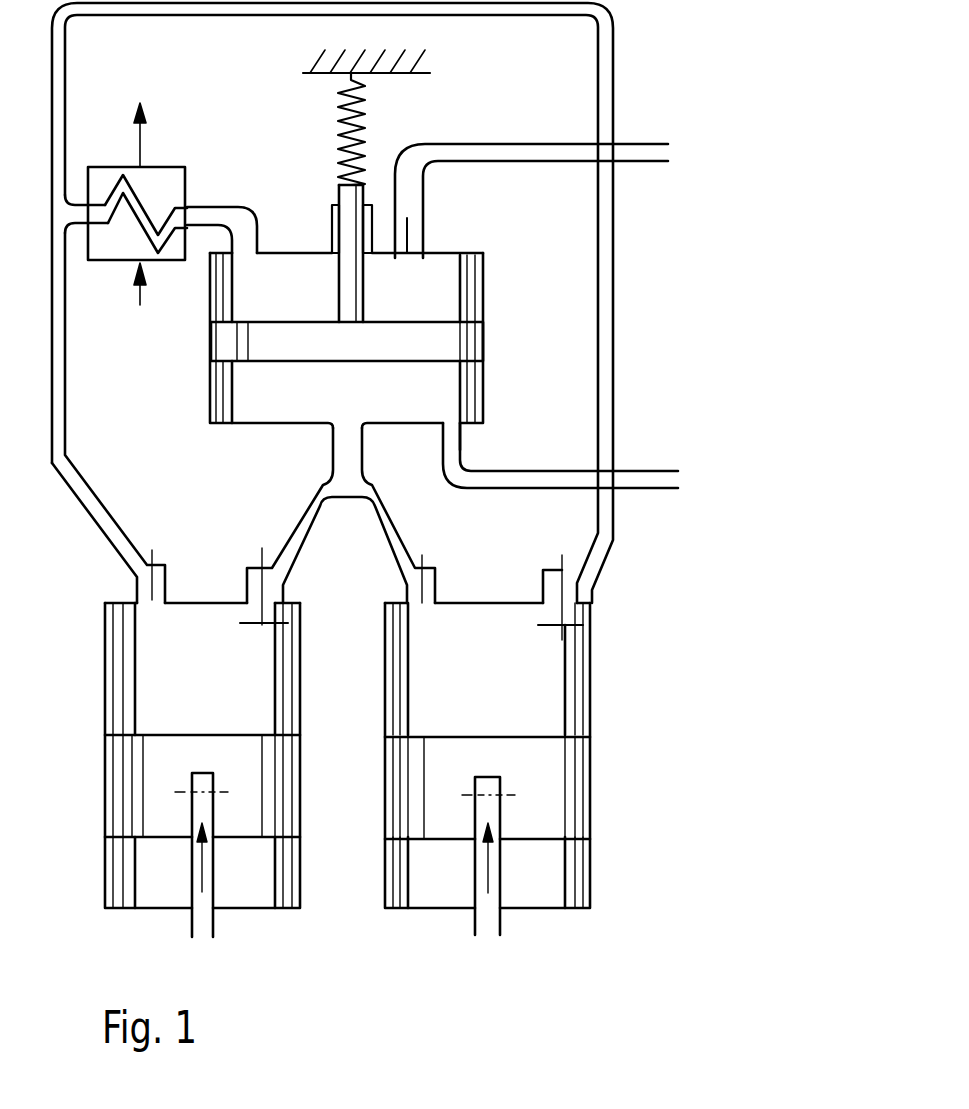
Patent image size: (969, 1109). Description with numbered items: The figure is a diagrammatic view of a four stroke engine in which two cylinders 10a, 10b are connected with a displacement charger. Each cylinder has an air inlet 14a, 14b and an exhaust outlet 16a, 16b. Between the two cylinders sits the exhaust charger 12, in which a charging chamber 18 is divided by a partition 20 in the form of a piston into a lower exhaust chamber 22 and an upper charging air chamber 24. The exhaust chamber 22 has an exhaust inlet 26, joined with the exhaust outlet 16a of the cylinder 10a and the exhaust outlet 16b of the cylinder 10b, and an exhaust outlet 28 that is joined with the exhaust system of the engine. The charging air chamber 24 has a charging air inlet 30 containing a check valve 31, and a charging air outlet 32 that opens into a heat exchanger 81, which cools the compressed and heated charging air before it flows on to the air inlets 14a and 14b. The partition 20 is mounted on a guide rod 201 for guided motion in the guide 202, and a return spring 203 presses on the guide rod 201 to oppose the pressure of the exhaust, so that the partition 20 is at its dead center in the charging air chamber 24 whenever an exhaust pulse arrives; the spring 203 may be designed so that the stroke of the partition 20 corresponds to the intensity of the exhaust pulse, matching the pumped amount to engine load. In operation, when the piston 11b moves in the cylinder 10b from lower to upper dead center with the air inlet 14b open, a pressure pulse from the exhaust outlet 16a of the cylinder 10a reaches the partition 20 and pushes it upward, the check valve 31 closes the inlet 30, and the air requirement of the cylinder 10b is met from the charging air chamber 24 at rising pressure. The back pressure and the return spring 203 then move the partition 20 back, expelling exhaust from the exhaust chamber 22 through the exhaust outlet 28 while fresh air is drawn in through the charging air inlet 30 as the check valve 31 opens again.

The cylinder 10a is at (103, 690).
The cylinder 10b is at (590, 642).
The piston 11b is at (567, 787).
The exhaust charger 12 is at (484, 380).
The air inlet 14a is at (158, 572).
The air inlet 14b is at (553, 583).
The exhaust outlet 16a is at (255, 582).
The exhaust outlet 16b is at (433, 572).
The charging chamber 18 is at (455, 270).
The partition 20 is at (456, 345).
The exhaust chamber 22 is at (452, 395).
The charging air chamber 24 is at (455, 290).
The exhaust inlet 26 is at (333, 452).
The exhaust outlet 28 is at (478, 468).
The charging air inlet 30 is at (495, 142).
The check valve 31 is at (413, 233).
The charging air outlet 32 is at (212, 205).
The heat exchanger 81 is at (175, 253).
The guide rod 201 is at (335, 190).
The guide 202 is at (333, 229).
The return spring 203 is at (362, 118).